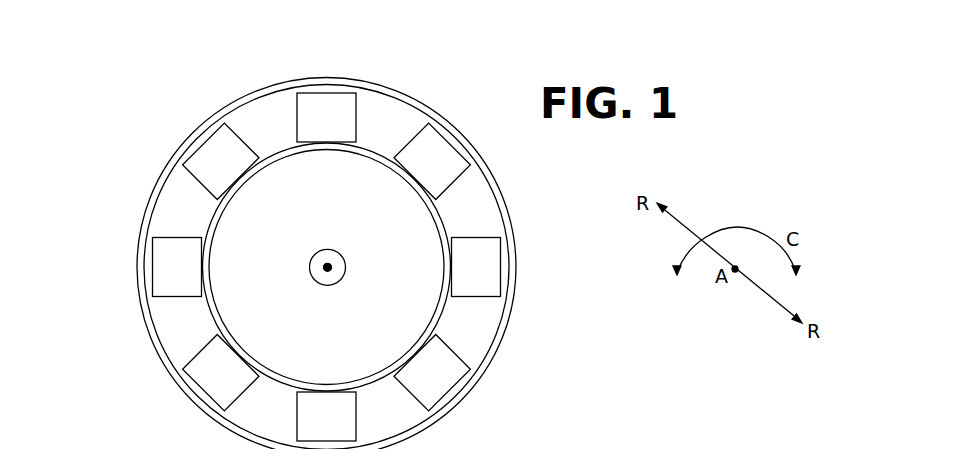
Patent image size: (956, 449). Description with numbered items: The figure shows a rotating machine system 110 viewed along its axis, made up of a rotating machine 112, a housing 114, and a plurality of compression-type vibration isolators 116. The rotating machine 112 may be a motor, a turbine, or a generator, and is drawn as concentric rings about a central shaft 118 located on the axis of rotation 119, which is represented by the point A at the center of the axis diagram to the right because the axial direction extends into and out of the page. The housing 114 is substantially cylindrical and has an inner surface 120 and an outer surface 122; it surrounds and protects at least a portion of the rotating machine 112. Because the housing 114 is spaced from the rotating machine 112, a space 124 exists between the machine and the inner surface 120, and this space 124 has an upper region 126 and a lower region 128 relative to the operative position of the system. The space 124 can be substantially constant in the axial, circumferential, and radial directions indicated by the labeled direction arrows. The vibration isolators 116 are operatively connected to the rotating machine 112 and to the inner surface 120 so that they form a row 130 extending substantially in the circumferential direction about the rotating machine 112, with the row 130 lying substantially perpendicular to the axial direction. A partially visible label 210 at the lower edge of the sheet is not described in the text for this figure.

The rotating machine system 110 is at (372, 225).
The rotating machine 112 is at (447, 218).
The housing 114 is at (518, 270).
The vibration isolators 116 is at (473, 285).
The central shaft 118 is at (317, 256).
The axis of rotation 119 is at (336, 258).
The inner surface 120 is at (160, 192).
The outer surface 122 is at (140, 292).
The space 124 is at (183, 222).
The upper region 126 is at (270, 130).
The lower region 128 is at (175, 330).
The row 130 is at (467, 420).
The reference numeral (adjacent figure) 210 is at (660, 448).